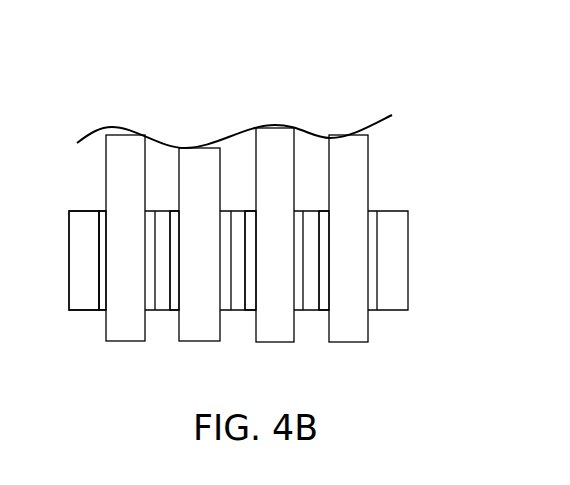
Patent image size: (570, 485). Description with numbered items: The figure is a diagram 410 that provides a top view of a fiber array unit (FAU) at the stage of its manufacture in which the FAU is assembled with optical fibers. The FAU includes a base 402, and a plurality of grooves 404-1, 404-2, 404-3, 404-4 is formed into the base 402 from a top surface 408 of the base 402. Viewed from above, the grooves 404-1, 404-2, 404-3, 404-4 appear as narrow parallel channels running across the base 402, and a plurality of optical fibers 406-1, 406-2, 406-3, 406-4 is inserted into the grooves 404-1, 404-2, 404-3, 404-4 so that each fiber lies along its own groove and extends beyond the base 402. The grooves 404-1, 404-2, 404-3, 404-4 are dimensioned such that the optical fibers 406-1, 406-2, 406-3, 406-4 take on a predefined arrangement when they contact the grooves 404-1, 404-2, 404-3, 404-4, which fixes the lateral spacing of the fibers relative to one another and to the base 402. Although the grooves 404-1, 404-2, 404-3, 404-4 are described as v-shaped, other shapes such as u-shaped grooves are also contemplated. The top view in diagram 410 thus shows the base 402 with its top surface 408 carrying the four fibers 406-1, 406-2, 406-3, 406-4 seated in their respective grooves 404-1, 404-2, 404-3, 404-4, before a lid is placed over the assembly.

The base 402 is at (417, 272).
The groove 404-1 is at (103, 302).
The groove 404-2 is at (177, 302).
The groove 404-3 is at (252, 303).
The groove 404-4 is at (325, 303).
The optical fiber 406-1 is at (123, 148).
The optical fiber 406-2 is at (193, 150).
The optical fiber 406-3 is at (272, 148).
The optical fiber 406-4 is at (347, 148).
The top surface 408 is at (88, 242).
The diagram 410 is at (393, 50).